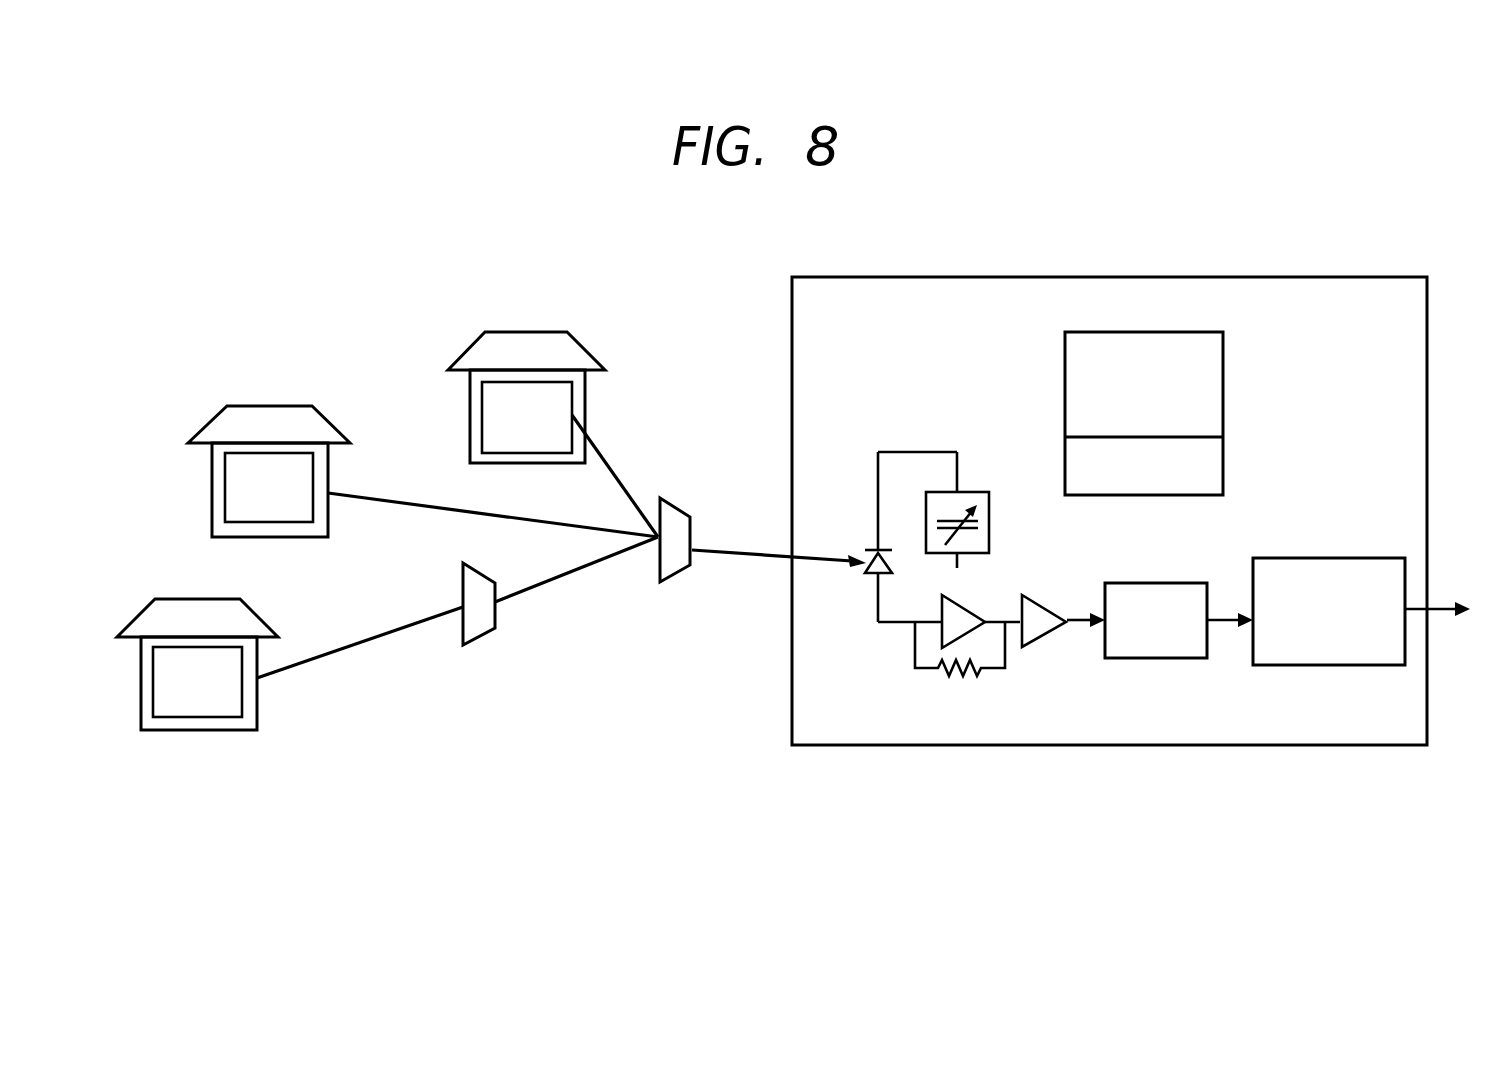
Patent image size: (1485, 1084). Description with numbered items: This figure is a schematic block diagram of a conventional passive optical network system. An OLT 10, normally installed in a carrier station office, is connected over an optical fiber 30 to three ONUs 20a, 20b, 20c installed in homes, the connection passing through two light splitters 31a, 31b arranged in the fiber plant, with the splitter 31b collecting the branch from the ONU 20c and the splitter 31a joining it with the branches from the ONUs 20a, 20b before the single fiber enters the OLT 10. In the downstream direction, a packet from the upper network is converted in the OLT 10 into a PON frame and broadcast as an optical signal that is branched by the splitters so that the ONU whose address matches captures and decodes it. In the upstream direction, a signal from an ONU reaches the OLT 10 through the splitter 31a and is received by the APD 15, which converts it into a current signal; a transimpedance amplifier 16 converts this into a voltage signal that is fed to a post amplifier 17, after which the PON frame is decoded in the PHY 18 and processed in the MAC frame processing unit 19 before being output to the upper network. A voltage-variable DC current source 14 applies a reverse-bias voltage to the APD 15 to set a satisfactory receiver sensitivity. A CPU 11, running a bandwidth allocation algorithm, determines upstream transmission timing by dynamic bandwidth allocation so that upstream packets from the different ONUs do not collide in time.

The OLT 10 is at (1343, 277).
The CPU 11 is at (1065, 343).
The DC current source 14 is at (980, 492).
The APD 15 is at (872, 577).
The transimpedance amplifier 16 is at (943, 642).
The post amplifier 17 is at (1045, 638).
The PHY 18 is at (1152, 660).
The MAC frame processing unit 19 is at (1300, 665).
The ONU 20a is at (528, 380).
The ONU 20b is at (265, 452).
The ONU 20c is at (180, 647).
The optical fiber 30 is at (337, 655).
The optical splitter 31a is at (673, 498).
The optical splitter 31b is at (483, 637).